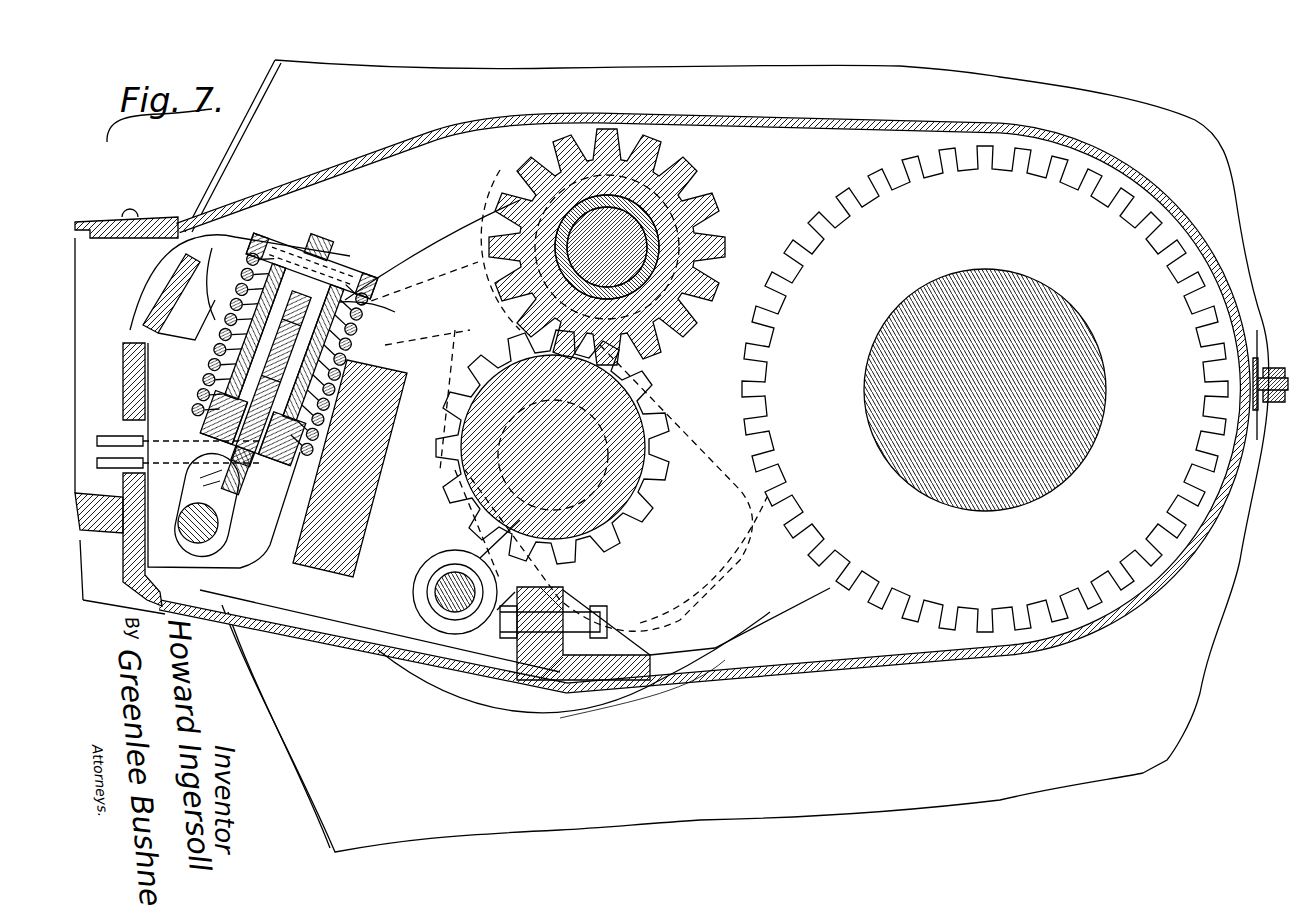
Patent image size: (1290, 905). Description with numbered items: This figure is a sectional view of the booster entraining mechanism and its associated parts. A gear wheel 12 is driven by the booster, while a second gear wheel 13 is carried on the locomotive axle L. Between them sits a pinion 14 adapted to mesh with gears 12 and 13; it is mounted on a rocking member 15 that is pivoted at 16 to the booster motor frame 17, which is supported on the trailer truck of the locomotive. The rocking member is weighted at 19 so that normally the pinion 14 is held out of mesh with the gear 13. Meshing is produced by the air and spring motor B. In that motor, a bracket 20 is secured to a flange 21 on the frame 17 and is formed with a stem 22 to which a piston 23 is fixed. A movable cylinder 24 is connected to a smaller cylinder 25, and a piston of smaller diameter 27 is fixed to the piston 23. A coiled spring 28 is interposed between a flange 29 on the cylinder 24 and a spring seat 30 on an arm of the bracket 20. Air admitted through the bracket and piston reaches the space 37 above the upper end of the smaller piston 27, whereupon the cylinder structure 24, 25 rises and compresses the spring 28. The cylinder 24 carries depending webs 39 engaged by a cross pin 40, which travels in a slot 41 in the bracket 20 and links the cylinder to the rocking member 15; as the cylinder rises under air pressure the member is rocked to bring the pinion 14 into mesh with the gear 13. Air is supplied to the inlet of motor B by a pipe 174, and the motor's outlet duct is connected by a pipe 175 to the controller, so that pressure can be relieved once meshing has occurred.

The gear wheel 12 is at (650, 408).
The gear wheel 13 is at (965, 150).
The pinion 14 is at (607, 130).
The rocking member 15 is at (450, 592).
The pivot 16 is at (378, 650).
The booster motor frame 17 is at (120, 343).
The weight 19 is at (377, 607).
The bracket 20 is at (150, 330).
The flange 21 is at (130, 214).
The stem 22 is at (388, 462).
The piston 23 is at (340, 388).
The movable cylinder 24 is at (320, 427).
The smaller cylinder 25 is at (338, 348).
The piston of smaller diameter 27 is at (325, 338).
The coiled spring 28 is at (332, 313).
The flange 29 is at (302, 455).
The spring seat 30 is at (362, 282).
The space 37 is at (310, 283).
The depending webs 39 is at (263, 472).
The cross pin 40 is at (222, 543).
The slot 41 is at (230, 521).
The pipe 174 is at (153, 580).
The pipe 175 is at (82, 240).
The air and spring motor B is at (236, 225).
The locomotive axle L is at (1078, 307).